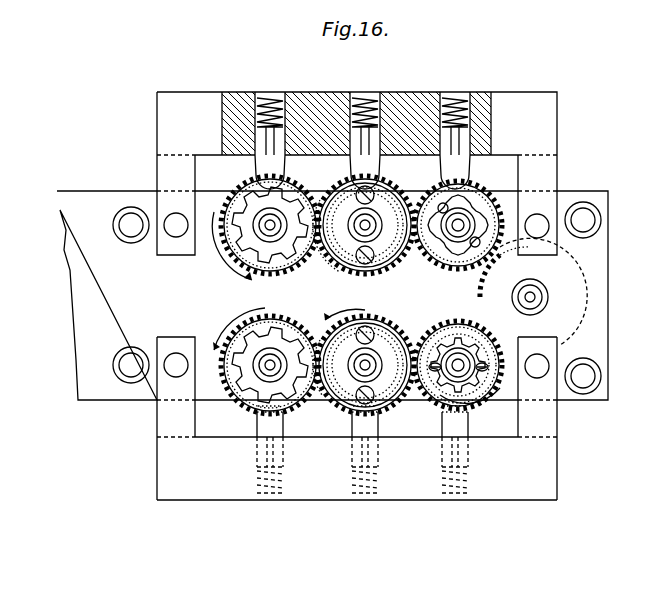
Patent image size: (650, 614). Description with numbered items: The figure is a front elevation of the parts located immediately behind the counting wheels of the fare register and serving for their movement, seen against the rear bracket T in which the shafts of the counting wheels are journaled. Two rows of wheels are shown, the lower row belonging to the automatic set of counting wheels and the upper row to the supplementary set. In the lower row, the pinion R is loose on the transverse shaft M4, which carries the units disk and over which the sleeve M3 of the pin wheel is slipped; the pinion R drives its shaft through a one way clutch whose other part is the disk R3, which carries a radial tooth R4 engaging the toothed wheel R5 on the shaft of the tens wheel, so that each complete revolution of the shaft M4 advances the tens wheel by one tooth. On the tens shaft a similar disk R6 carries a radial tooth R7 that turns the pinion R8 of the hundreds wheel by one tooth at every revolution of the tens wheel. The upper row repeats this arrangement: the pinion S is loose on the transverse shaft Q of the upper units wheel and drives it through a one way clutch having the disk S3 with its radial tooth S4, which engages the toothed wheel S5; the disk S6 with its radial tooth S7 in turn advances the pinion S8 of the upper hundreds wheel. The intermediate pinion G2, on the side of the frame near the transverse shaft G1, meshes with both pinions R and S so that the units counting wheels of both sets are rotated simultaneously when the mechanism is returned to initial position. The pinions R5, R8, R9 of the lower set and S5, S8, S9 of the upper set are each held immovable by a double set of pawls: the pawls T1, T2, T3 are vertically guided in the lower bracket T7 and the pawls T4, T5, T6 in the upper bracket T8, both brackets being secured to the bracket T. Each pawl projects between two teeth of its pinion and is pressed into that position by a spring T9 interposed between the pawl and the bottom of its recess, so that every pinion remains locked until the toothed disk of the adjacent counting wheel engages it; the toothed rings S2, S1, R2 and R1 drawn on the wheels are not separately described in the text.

The bracket T is at (332, 327).
The upper bracket T8 is at (513, 112).
The lower bracket T7 is at (200, 488).
The spring T9 is at (277, 95).
The pawl T6 is at (262, 165).
The pawl T5 is at (357, 168).
The pawl T4 is at (462, 178).
The pawl T3 is at (268, 425).
The pawl T2 is at (357, 427).
The pawl T1 is at (440, 445).
The upper gear wheel S2 is at (289, 268).
The pinion S8 is at (251, 243).
The upper gear wheel S1 is at (392, 250).
The radial tooth S7 is at (318, 250).
The disk S6 is at (328, 248).
The toothed wheel S5 is at (363, 258).
The disk S3 is at (434, 195).
The radial tooth S4 is at (405, 190).
The pinion S9 is at (446, 250).
The transverse shaft Q is at (467, 222).
The pinion S is at (507, 230).
The transverse shaft G1 is at (535, 297).
The intermediate pinion G2 is at (558, 273).
The lower gear wheel R2 is at (250, 404).
The pinion R8 is at (249, 388).
The lower gear wheel R1 is at (343, 415).
The radial tooth R7 is at (319, 393).
The disk R6 is at (330, 396).
The toothed wheel R5 is at (387, 413).
The disk R3 is at (436, 395).
The pinion R9 is at (435, 412).
The radial tooth R4 is at (466, 445).
The pinion R is at (478, 412).
The sleeve M3 is at (484, 370).
The transverse shaft M4 is at (466, 378).